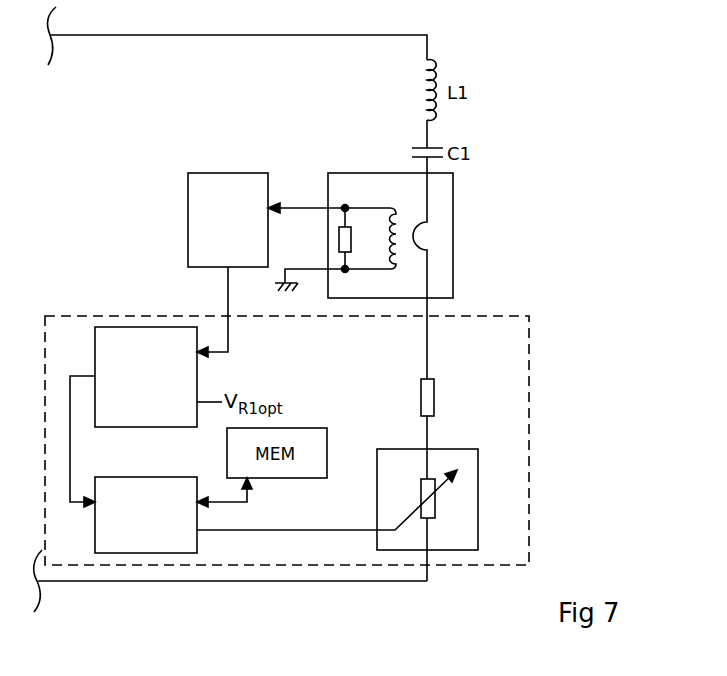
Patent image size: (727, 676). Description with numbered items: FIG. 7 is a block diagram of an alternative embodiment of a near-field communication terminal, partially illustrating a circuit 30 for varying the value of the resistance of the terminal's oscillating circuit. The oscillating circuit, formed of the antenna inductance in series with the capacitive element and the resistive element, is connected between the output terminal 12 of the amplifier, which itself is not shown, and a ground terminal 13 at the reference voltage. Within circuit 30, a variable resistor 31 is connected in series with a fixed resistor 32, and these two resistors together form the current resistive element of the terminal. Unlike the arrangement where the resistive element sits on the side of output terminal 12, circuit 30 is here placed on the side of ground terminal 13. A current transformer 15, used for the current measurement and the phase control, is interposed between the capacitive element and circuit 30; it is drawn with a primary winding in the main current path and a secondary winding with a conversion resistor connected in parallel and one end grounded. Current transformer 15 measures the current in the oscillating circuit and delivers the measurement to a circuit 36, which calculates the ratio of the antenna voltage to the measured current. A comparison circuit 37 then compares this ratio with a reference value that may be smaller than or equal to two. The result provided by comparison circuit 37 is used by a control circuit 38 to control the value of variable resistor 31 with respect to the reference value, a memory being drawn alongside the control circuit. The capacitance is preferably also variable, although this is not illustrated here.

The output terminal 12 is at (193, 35).
The ground terminal 13 is at (236, 581).
The current transformer 15 is at (453, 261).
The circuit for varying the value of resistance R1 30 is at (529, 425).
The variable resistor 31 is at (478, 498).
The fixed resistor 32 is at (434, 410).
The ratio calculation circuit 36 is at (226, 173).
The comparison circuit 37 is at (143, 327).
The control circuit 38 is at (123, 477).